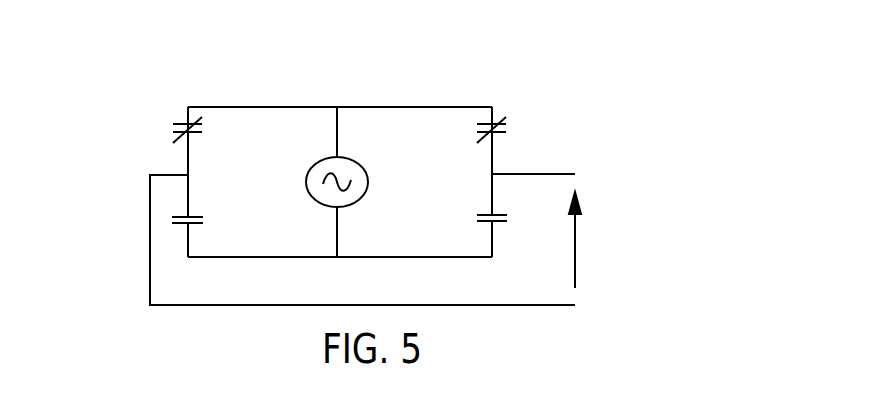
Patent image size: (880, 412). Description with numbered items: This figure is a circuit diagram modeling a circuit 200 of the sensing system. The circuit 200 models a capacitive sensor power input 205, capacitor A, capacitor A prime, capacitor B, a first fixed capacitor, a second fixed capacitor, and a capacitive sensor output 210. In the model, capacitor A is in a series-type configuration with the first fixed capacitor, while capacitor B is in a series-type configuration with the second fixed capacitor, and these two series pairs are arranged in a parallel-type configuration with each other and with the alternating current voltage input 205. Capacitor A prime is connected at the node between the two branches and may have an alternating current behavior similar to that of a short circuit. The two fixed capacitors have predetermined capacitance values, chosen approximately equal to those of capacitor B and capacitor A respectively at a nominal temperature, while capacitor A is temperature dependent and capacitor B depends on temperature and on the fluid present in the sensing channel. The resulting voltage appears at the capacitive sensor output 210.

The circuit 200 is at (137, 113).
The capacitive sensor power input 205 is at (317, 160).
The capacitive sensor output 210 is at (623, 231).